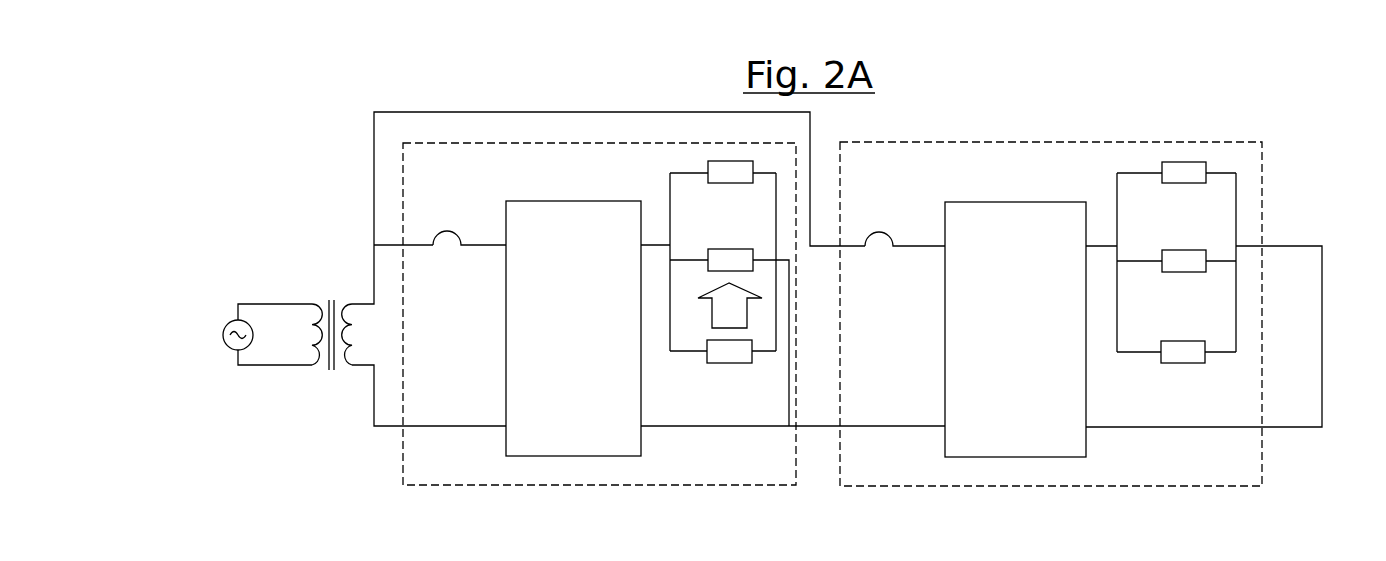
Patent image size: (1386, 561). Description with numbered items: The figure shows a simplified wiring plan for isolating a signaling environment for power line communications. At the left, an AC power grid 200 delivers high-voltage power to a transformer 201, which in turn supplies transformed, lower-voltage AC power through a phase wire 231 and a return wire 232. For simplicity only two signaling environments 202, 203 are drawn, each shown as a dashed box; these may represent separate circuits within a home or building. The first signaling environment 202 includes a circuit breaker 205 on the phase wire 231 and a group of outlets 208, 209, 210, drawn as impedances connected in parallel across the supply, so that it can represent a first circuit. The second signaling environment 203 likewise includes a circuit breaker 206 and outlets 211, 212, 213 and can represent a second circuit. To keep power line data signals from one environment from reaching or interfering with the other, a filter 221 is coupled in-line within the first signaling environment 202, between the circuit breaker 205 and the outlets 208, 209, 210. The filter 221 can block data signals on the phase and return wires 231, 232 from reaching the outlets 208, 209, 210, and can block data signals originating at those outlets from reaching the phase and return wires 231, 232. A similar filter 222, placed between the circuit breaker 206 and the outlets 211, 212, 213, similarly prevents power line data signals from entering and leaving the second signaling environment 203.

The AC power grid 200 is at (223, 320).
The transformer 201 is at (327, 303).
The signaling environment 202 is at (520, 500).
The signaling environment 203 is at (1010, 502).
The circuit breaker 205 is at (448, 232).
The circuit breaker 206 is at (872, 223).
The outlet 208 is at (688, 187).
The outlet 209 is at (693, 250).
The outlet 210 is at (685, 367).
The outlet 211 is at (1147, 180).
The outlet 212 is at (1147, 277).
The outlet 213 is at (1145, 360).
The filter 221 is at (567, 193).
The filter 222 is at (1005, 193).
The phase wire 231 is at (369, 188).
The return wire 232 is at (365, 395).